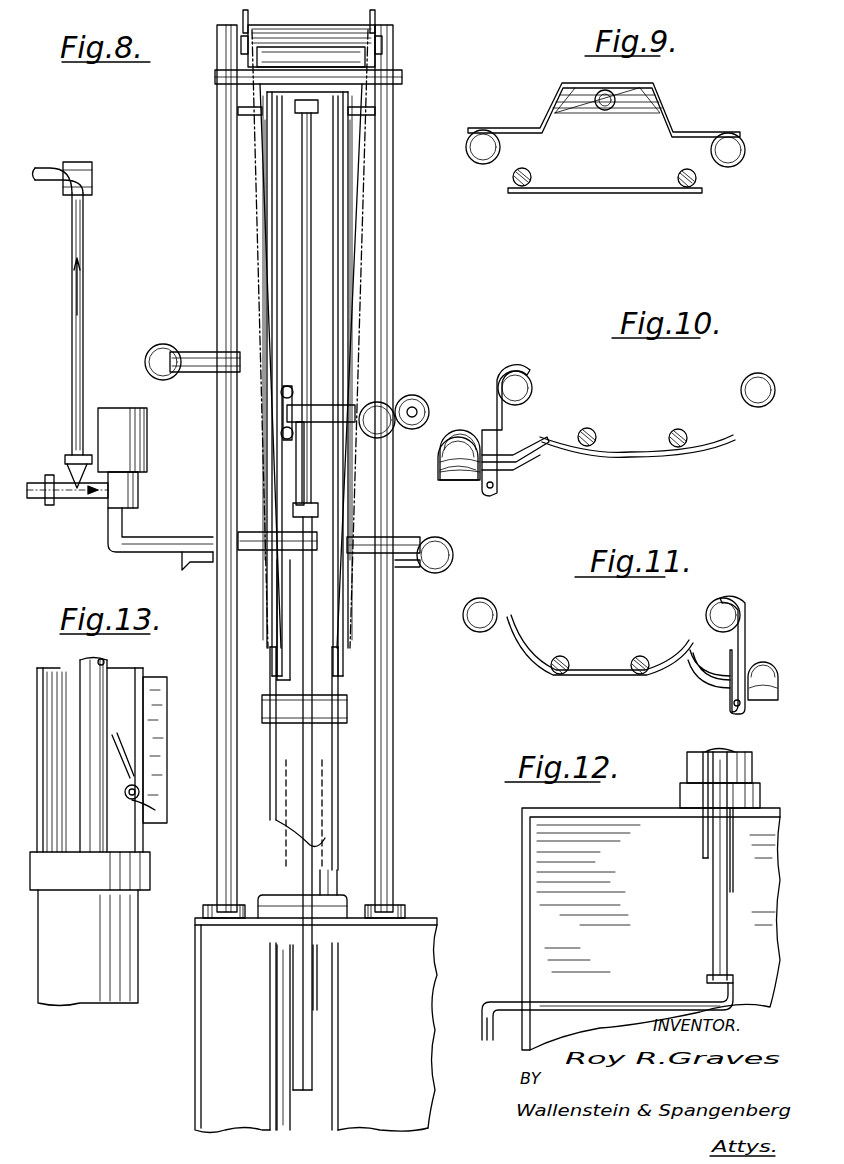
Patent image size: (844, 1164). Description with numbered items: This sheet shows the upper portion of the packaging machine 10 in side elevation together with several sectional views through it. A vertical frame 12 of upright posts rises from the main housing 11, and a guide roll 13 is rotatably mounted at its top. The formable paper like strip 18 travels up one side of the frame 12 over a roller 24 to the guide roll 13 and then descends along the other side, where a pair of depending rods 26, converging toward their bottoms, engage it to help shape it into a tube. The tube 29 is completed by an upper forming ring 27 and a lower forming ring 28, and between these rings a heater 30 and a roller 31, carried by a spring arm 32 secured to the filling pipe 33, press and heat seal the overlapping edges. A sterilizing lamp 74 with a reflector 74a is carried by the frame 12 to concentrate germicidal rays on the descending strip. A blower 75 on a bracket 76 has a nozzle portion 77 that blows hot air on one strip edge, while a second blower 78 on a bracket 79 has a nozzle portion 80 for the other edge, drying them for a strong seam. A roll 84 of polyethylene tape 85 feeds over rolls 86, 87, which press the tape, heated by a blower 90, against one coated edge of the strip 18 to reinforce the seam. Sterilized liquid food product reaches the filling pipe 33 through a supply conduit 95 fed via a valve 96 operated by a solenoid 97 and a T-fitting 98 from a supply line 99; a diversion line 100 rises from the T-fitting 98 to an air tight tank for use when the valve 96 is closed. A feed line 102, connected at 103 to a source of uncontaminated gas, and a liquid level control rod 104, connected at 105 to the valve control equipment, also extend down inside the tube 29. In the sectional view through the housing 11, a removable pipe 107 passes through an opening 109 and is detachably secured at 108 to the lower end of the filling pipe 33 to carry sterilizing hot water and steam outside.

In FIG. 8, the packaging machine 10 is at (440, 908).
In FIG. 8, the main housing 11 is at (424, 946).
In FIG. 12, the main housing 11 is at (522, 838).
In FIG. 8, the vertical frame 12 is at (228, 660).
In FIG. 9, the vertical frame 12 is at (478, 165).
In FIG. 10, the vertical frame 12 is at (535, 386).
In FIG. 11, the vertical frame 12 is at (490, 602).
In FIG. 8, the guide roll 13 is at (368, 27).
In FIG. 8, the strip 18 is at (350, 272).
In FIG. 13, the strip 18 is at (58, 678).
In FIG. 9, the strip 18 is at (624, 194).
In FIG. 10, the strip 18 is at (643, 458).
In FIG. 11, the strip 18 is at (597, 682).
In FIG. 12, the strip 18 is at (730, 750).
In FIG. 13, the roller 24 is at (38, 840).
In FIG. 8, the depending rods 26 is at (268, 212).
In FIG. 9, the depending rods 26 is at (677, 174).
In FIG. 10, the depending rods 26 is at (590, 428).
In FIG. 11, the depending rods 26 is at (563, 655).
In FIG. 8, the upper forming ring 27 is at (268, 728).
In FIG. 8, the lower forming ring 28 is at (262, 895).
In FIG. 13, the lower forming ring 28 is at (150, 878).
In FIG. 12, the lower forming ring 28 is at (678, 796).
In FIG. 8, the formable paper like tube 29 is at (332, 876).
In FIG. 13, the formable paper like tube 29 is at (82, 1001).
In FIG. 12, the formable paper like tube 29 is at (757, 755).
In FIG. 13, the heater 30 is at (168, 740).
In FIG. 13, the roller 31 is at (162, 820).
In FIG. 13, the spring arm 32 is at (122, 742).
In FIG. 8, the filling pipe 33 is at (310, 600).
In FIG. 13, the filling pipe 33 is at (86, 830).
In FIG. 12, the filling pipe 33 is at (712, 923).
In FIG. 8, the sterilizing lamp 74 is at (305, 243).
In FIG. 9, the sterilizing lamp 74 is at (605, 112).
In FIG. 8, the reflector 74a is at (340, 181).
In FIG. 9, the reflector 74a is at (553, 100).
In FIG. 8, the blower 75 is at (150, 368).
In FIG. 10, the blower 75 is at (455, 451).
In FIG. 10, the bracket 76 is at (496, 432).
In FIG. 8, the nozzle portion 77 is at (232, 340).
In FIG. 10, the nozzle portion 77 is at (530, 466).
In FIG. 8, the blower 78 is at (455, 554).
In FIG. 11, the blower 78 is at (767, 660).
In FIG. 11, the bracket 79 is at (735, 660).
In FIG. 8, the nozzle portion 80 is at (358, 530).
In FIG. 11, the nozzle portion 80 is at (688, 676).
In FIG. 8, the roll of polyethylene tape 84 is at (430, 413).
In FIG. 8, the polyethylene tape 85 is at (362, 380).
In FIG. 8, the roll 86 is at (238, 407).
In FIG. 8, the roll 87 is at (282, 436).
In FIG. 8, the blower 90 is at (370, 440).
In FIG. 8, the supply conduit 95 is at (150, 553).
In FIG. 8, the valve 96 is at (125, 492).
In FIG. 8, the solenoid 97 is at (135, 458).
In FIG. 8, the T-fitting 98 is at (95, 500).
In FIG. 8, the supply line 99 is at (47, 506).
In FIG. 8, the diversion line 100 is at (85, 245).
In FIG. 8, the feed line 102 is at (280, 590).
In FIG. 12, the feed line 102 is at (702, 859).
In FIG. 8, the connection to gas source 103 is at (205, 572).
In FIG. 8, the liquid level control rod 104 is at (320, 976).
In FIG. 12, the liquid level control rod 104 is at (735, 878).
In FIG. 8, the connection of control rod 105 is at (404, 568).
In FIG. 12, the pipe 107 is at (570, 1010).
In FIG. 12, the detachable connection 108 is at (706, 979).
In FIG. 12, the opening 109 is at (505, 1006).